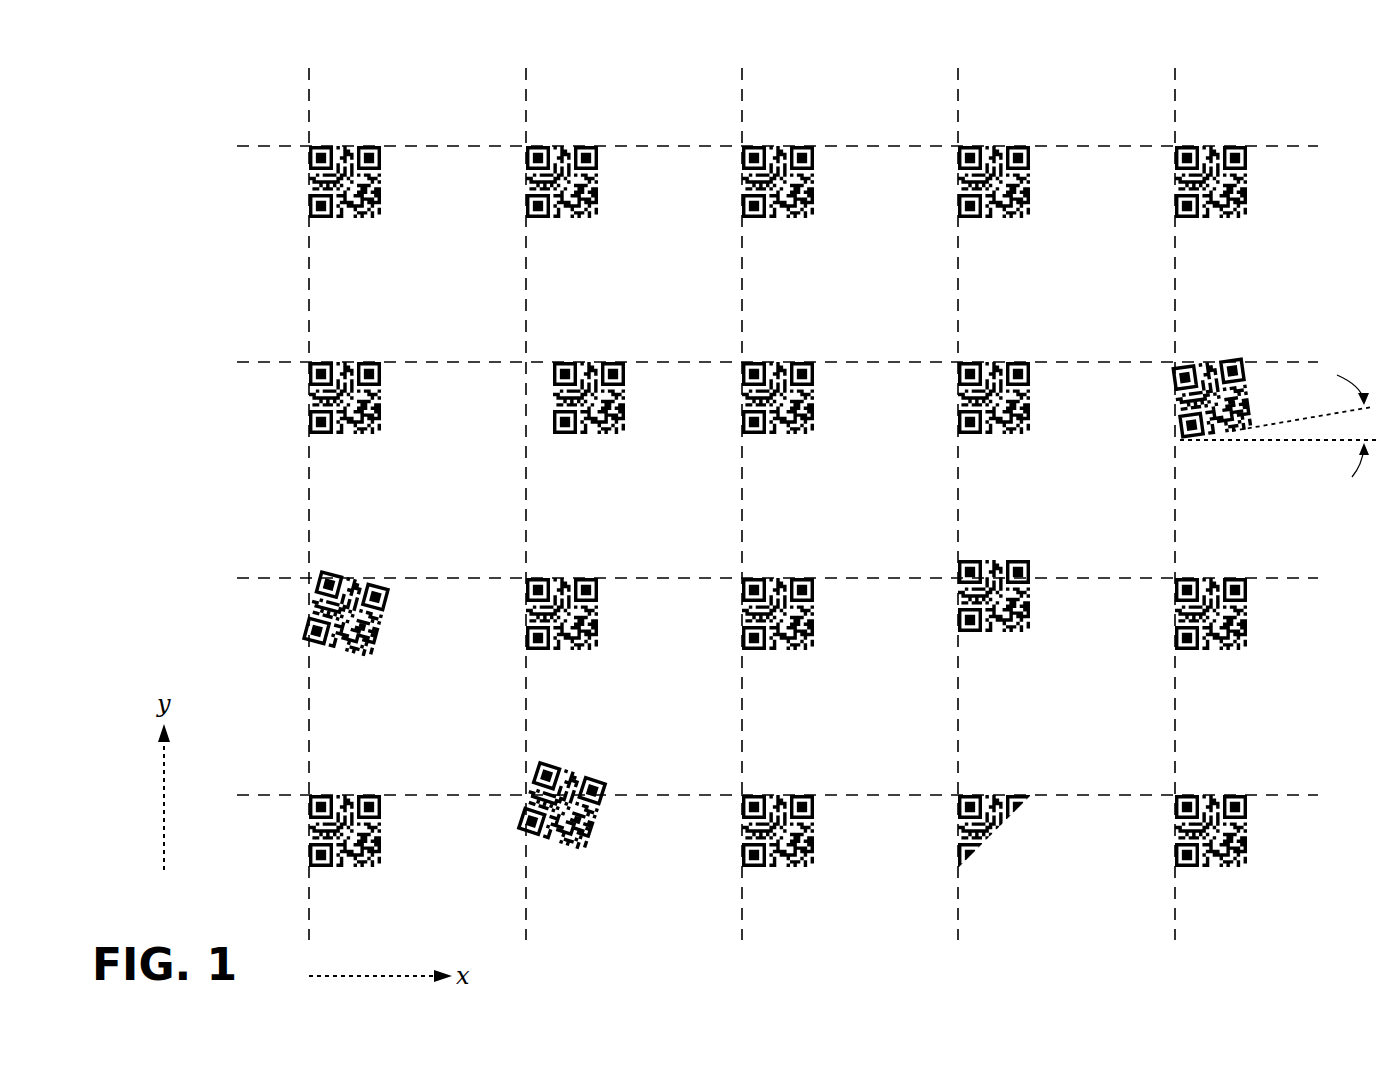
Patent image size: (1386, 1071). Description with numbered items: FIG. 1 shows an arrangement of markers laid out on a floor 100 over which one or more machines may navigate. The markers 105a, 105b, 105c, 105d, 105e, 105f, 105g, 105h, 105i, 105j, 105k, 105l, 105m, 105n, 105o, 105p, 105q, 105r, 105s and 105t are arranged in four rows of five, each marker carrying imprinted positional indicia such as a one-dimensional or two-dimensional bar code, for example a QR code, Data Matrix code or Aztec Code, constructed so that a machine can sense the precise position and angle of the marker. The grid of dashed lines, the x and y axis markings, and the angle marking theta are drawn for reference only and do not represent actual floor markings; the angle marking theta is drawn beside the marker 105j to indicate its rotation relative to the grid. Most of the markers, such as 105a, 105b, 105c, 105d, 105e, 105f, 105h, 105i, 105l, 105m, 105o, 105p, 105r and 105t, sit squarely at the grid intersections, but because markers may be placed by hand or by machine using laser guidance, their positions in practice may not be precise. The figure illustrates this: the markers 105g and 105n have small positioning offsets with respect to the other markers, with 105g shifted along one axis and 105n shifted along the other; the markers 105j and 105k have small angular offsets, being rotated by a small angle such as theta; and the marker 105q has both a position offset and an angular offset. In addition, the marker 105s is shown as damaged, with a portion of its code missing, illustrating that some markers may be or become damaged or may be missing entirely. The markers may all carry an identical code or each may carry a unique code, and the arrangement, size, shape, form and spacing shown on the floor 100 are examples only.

The floor 100 is at (182, 138).
The marker 105a is at (312, 182).
The marker 105b is at (529, 182).
The marker 105c is at (745, 182).
The marker 105d is at (961, 182).
The marker 105e is at (1178, 182).
The marker 105f is at (312, 398).
The marker 105g is at (556, 398).
The marker 105h is at (745, 398).
The marker 105i is at (961, 398).
The marker 105j is at (1180, 396).
The marker 105k is at (318, 612).
The marker 105l is at (529, 614).
The marker 105m is at (745, 614).
The marker 105n is at (961, 614).
The marker 105o is at (1178, 614).
The marker 105p is at (312, 831).
The marker 105q is at (527, 827).
The marker 105r is at (745, 831).
The marker 105s is at (961, 831).
The marker 105t is at (1178, 831).
The rotation angle theta is at (1278, 426).